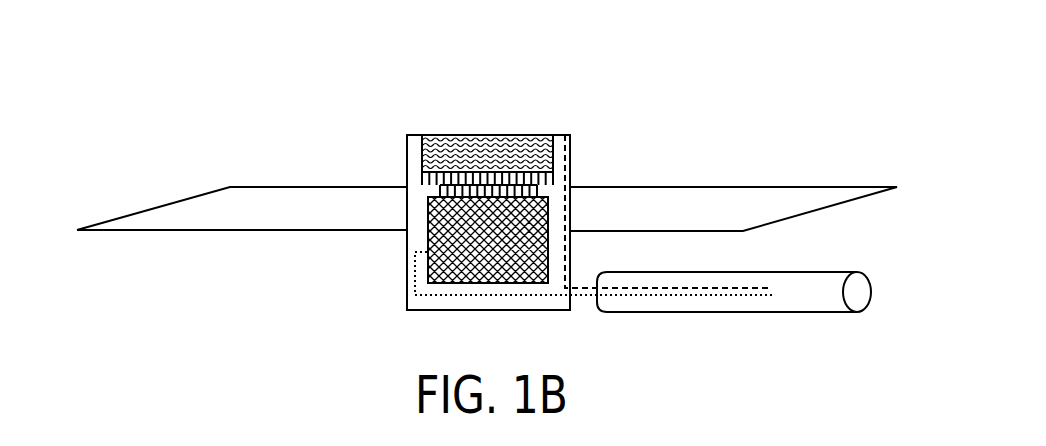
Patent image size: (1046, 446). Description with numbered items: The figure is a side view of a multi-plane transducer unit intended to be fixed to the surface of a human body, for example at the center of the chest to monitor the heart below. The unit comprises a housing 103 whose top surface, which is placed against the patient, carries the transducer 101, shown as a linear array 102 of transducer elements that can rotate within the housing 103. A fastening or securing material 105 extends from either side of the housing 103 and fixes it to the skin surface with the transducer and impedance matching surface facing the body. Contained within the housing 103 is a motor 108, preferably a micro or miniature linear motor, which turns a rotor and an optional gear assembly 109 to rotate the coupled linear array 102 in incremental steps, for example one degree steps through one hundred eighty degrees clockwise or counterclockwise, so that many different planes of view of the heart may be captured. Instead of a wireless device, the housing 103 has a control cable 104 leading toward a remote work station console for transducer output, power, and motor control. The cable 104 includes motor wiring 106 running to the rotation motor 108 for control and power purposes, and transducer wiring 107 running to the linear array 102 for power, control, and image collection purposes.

The transducer 101 is at (424, 150).
The linear array 102 is at (487, 132).
The housing 103 is at (402, 216).
The control cable 104 is at (875, 294).
The fastening or securing material 105 is at (149, 207).
The motor wiring 106 is at (409, 294).
The transducer wiring 107 is at (575, 142).
The motor 108 is at (550, 236).
The gear assembly 109 is at (564, 181).